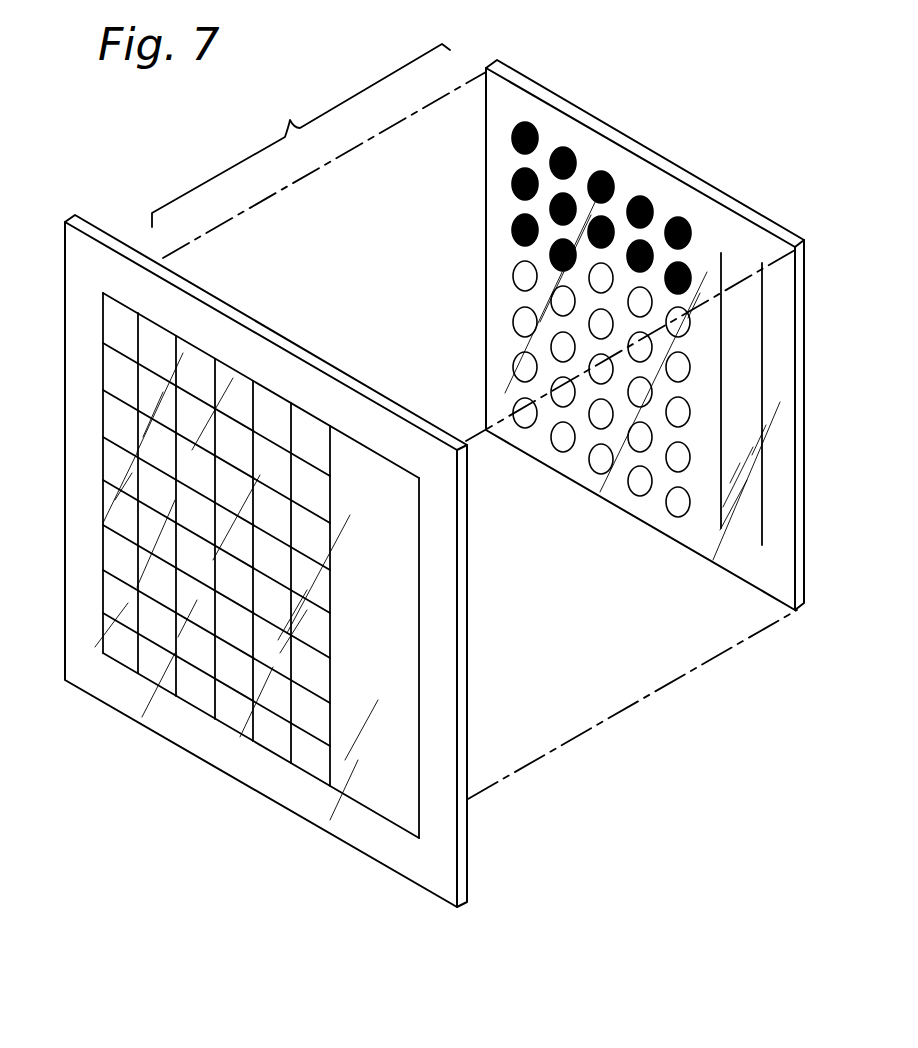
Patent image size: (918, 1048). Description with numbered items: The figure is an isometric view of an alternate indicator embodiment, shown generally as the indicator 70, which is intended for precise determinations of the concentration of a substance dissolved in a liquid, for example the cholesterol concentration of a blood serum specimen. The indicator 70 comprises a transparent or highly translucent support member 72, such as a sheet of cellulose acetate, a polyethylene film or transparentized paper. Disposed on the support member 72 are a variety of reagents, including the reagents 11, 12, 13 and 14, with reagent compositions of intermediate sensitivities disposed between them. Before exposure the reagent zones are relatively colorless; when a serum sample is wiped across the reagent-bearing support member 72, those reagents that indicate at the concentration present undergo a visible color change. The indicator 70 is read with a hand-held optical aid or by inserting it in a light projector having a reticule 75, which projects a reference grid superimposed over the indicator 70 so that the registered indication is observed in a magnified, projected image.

The reagent 11 is at (514, 134).
The reagent 12 is at (512, 231).
The reagent 13 is at (520, 322).
The reagent 14 is at (516, 414).
The indicator 70 is at (435, 270).
The support member 72 is at (613, 335).
The reticule 75 is at (307, 347).